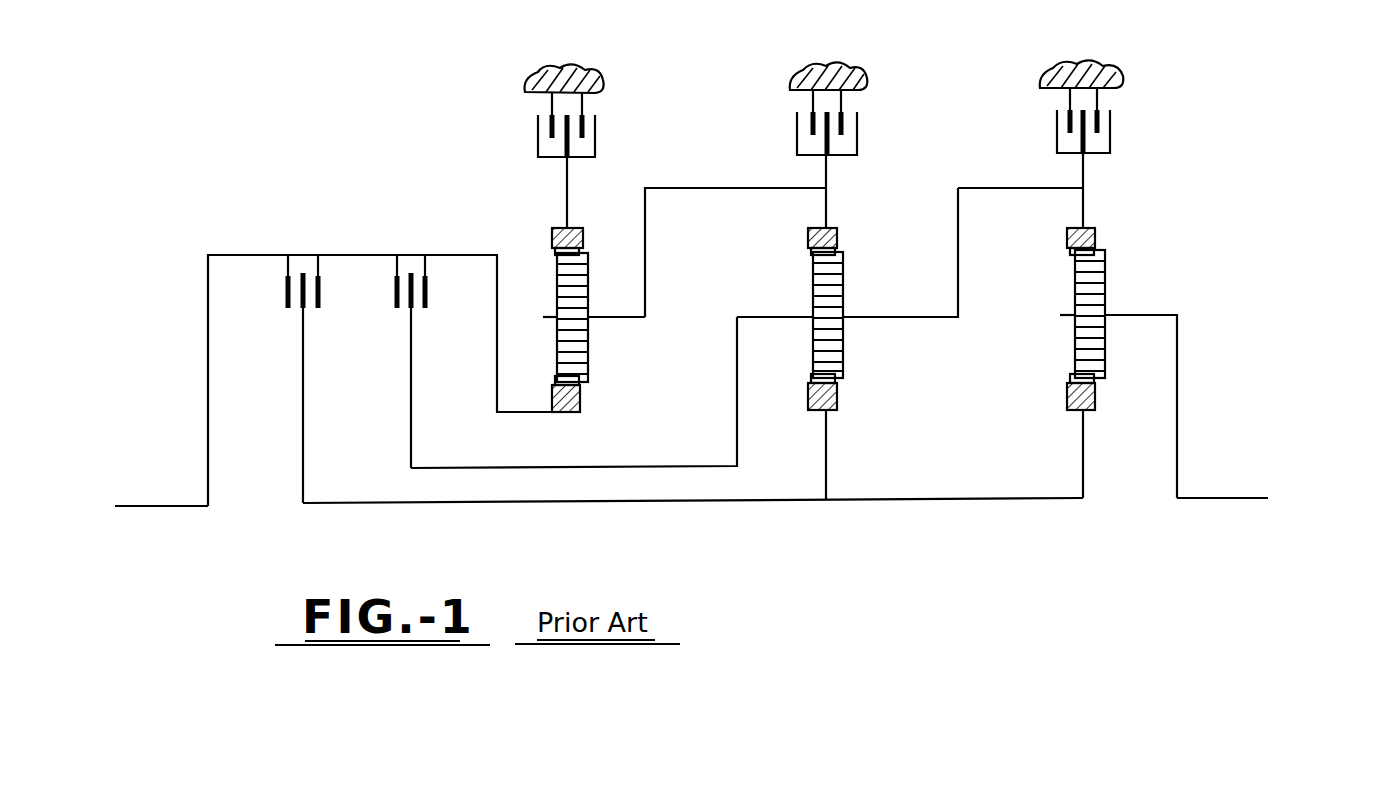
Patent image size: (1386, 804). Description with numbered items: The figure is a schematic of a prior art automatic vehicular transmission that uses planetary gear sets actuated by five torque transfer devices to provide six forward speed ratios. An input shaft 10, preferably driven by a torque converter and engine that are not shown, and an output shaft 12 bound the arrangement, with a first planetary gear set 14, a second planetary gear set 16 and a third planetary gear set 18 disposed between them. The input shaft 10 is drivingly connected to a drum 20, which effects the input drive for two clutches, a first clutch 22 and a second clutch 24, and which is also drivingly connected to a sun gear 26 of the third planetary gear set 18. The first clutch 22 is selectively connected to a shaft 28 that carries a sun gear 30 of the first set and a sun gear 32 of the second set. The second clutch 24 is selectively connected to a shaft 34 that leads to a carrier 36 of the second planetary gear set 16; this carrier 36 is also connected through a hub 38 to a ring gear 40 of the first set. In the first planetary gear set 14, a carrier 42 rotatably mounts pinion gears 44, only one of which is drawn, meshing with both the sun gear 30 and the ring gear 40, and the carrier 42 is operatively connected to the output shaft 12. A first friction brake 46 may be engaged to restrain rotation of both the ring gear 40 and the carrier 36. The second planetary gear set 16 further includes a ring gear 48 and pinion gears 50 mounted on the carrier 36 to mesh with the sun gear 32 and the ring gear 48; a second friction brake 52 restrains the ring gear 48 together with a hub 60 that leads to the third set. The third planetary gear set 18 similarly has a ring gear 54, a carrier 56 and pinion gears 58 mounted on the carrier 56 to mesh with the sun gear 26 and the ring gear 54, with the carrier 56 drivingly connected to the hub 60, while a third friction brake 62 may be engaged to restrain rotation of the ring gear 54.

The input shaft 10 is at (147, 505).
The output shaft 12 is at (1262, 497).
The first planetary gear set 14 is at (1108, 215).
The second planetary gear set 16 is at (848, 218).
The third planetary gear set 18 is at (588, 218).
The drum 20 is at (237, 253).
The first clutch 22 is at (307, 246).
The second clutch 24 is at (413, 246).
The sun gear 26 is at (582, 400).
The shaft 28 is at (730, 502).
The sun gear 30 is at (1097, 398).
The sun gear 32 is at (838, 398).
The shaft 34 is at (505, 466).
The carrier 36 is at (770, 316).
The hub 38 is at (1027, 190).
The ring gear 40 is at (1067, 236).
The carrier 42 is at (1152, 314).
The pinion gears 44 is at (1078, 338).
The first friction brake 46 is at (1050, 116).
The ring gear 48 is at (808, 235).
The pinion gears 50 is at (843, 340).
The second friction brake 52 is at (792, 118).
The ring gear 54 is at (552, 233).
The carrier 56 is at (616, 318).
The pinion gears 58 is at (588, 350).
The hub 60 is at (646, 240).
The third friction brake 62 is at (528, 120).